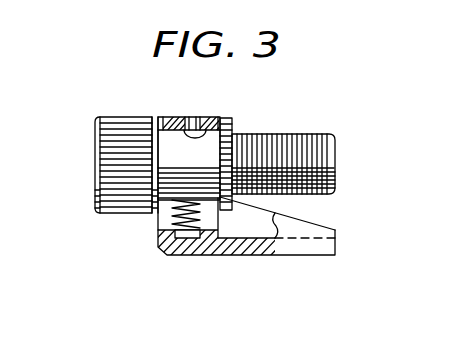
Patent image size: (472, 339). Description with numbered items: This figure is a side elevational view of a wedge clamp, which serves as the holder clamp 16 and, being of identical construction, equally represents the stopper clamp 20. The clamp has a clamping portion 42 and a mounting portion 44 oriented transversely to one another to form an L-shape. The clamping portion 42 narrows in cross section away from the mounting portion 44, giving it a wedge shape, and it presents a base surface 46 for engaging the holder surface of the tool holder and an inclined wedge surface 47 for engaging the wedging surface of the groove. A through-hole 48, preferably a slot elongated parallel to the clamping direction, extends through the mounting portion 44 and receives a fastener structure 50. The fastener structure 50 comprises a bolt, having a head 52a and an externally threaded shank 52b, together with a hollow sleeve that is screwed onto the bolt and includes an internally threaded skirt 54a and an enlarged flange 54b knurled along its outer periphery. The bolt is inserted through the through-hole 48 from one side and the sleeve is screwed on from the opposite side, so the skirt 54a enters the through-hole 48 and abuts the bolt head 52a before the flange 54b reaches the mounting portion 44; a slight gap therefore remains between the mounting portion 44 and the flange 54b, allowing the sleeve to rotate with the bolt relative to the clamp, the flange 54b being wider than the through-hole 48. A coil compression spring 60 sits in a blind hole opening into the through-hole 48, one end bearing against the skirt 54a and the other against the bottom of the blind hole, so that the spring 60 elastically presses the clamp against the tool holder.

The holder clamp 16 is at (313, 130).
The stopper clamp 20 is at (236, 102).
The clamping portion 42 is at (286, 230).
The mounting portion 44 is at (165, 117).
The base surface 46 is at (251, 254).
The inclined wedge surface 47 is at (308, 220).
The through-hole 48 is at (190, 123).
The fastener structure 50 is at (115, 113).
The head 52a is at (100, 140).
The externally threaded shank 52b is at (316, 160).
The internally threaded skirt 54a is at (176, 160).
The enlarged flange 54b is at (228, 130).
The coil compression spring 60 is at (157, 220).